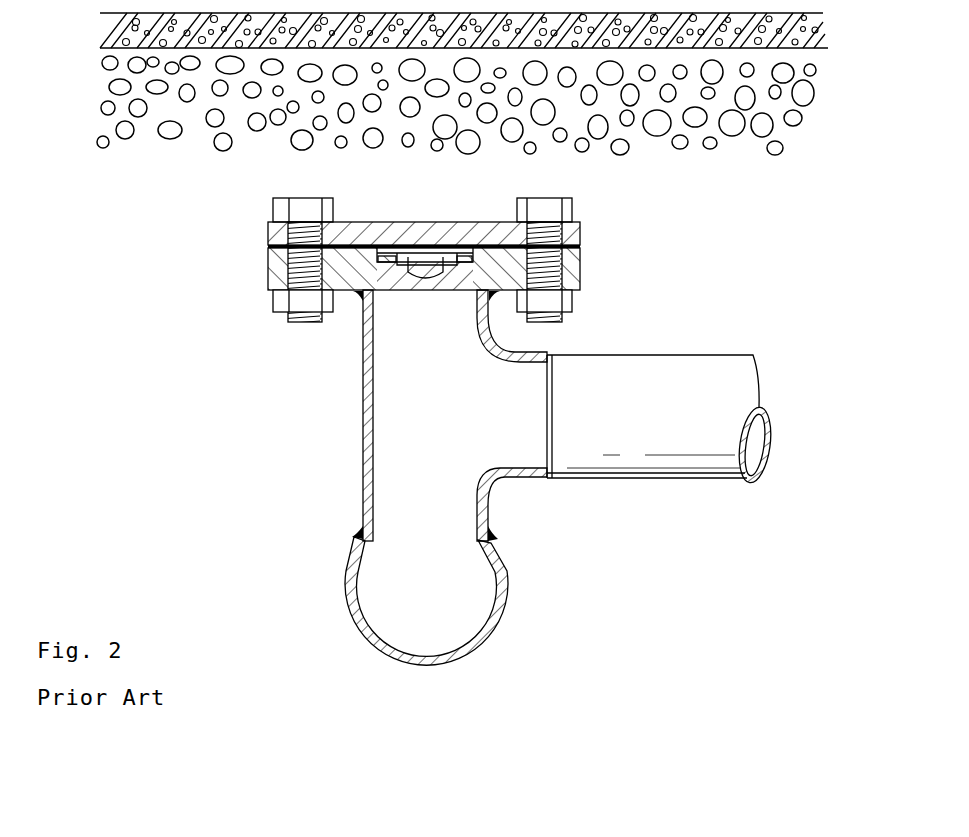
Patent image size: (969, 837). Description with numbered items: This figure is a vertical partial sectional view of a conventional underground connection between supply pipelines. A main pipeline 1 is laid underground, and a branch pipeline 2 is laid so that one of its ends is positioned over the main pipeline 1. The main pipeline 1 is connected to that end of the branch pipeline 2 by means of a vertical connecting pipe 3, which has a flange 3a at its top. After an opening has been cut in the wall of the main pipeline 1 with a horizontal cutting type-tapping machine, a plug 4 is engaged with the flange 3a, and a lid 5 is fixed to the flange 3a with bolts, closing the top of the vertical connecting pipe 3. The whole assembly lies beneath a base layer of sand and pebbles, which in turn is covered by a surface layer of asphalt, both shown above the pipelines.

The main pipeline 1 is at (452, 660).
The branch pipeline 2 is at (712, 466).
The vertical connecting pipe 3 is at (365, 437).
The flange 3a is at (267, 272).
The plug 4 is at (480, 220).
The lid 5 is at (373, 227).